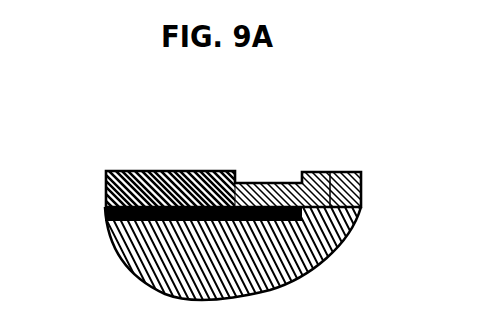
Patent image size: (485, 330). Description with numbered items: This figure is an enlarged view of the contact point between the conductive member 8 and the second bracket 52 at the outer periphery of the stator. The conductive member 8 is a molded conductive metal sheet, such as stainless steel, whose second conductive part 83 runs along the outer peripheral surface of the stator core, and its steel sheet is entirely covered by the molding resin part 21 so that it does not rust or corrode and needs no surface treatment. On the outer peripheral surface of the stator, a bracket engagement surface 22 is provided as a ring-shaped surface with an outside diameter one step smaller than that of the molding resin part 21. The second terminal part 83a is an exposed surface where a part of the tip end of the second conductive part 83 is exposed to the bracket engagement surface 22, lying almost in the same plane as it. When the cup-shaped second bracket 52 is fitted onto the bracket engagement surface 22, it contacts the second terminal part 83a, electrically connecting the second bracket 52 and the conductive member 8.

The conductive member 8 is at (98, 218).
The second bracket 52 is at (370, 189).
The molding resin part 21 is at (194, 172).
The second conductive part 83 is at (145, 190).
The second terminal part 83a is at (268, 198).
The bracket engagement surface 22 is at (333, 173).